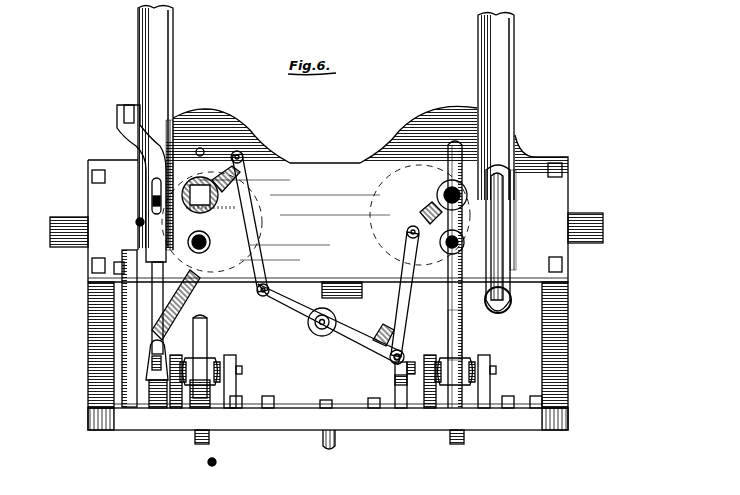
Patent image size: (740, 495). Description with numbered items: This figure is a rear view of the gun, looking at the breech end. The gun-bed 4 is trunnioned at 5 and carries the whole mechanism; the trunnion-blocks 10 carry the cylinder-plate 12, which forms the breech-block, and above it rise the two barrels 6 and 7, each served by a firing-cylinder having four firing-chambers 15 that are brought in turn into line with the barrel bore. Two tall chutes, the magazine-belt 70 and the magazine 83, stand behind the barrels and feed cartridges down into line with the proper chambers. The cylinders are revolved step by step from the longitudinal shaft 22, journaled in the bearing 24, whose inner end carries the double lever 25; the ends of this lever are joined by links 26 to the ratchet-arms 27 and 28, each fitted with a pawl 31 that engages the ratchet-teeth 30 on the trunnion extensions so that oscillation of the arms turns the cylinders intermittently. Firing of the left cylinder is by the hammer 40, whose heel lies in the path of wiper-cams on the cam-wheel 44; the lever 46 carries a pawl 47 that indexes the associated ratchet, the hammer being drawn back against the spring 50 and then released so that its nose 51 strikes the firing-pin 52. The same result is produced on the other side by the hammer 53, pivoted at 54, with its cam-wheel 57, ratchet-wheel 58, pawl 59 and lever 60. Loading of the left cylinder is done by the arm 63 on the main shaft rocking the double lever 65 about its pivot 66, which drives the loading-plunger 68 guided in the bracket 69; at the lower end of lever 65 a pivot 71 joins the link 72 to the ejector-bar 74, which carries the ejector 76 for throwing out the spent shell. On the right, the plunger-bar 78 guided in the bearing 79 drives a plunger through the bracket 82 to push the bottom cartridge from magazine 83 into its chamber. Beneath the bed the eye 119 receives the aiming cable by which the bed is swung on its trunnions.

The gun-bed 4 is at (378, 425).
The trunnion 5 is at (50, 235).
The barrel 6 is at (213, 108).
The barrel 7 is at (443, 108).
The trunnion-block 10 is at (96, 335).
The cylinder-plate 12 is at (328, 194).
The firing-chamber 15 is at (204, 252).
The shaft 22 is at (322, 336).
The bearing 24 is at (342, 300).
The double lever 25 is at (296, 312).
The link 26 is at (280, 228).
The ratchet-arm 27 is at (244, 150).
The ratchet-arm 28 is at (437, 174).
The ratchet-teeth 30 is at (504, 164).
The pawl 31 is at (163, 185).
The hammer 40 is at (195, 331).
The cam-wheel 44 is at (197, 446).
The lever 46 is at (162, 398).
The pawl 47 is at (242, 369).
The spring 50 is at (212, 358).
The nose 51 is at (448, 150).
The firing-pin 52 is at (204, 149).
The hammer 53 is at (462, 318).
The pivot 54 is at (496, 370).
The cam-wheel 57 is at (455, 445).
The ratchet-wheel 58 is at (415, 410).
The pawl 59 is at (414, 362).
The lever 60 is at (394, 376).
The arm 63 is at (150, 196).
The double lever 65 is at (135, 148).
The pivot 66 is at (118, 270).
The loading-plunger 68 is at (156, 207).
The bracket 69 is at (140, 224).
The chute or magazine-belt 70 is at (173, 48).
The pivot 71 is at (150, 372).
The link 72 is at (158, 382).
The ejector-bar 74 is at (176, 305).
The ejector 76 is at (200, 252).
The plunger-bar 78 is at (508, 254).
The bearing 79 is at (508, 306).
The bracket 82 is at (514, 214).
The magazine 83 is at (515, 92).
The eye 119 is at (329, 452).